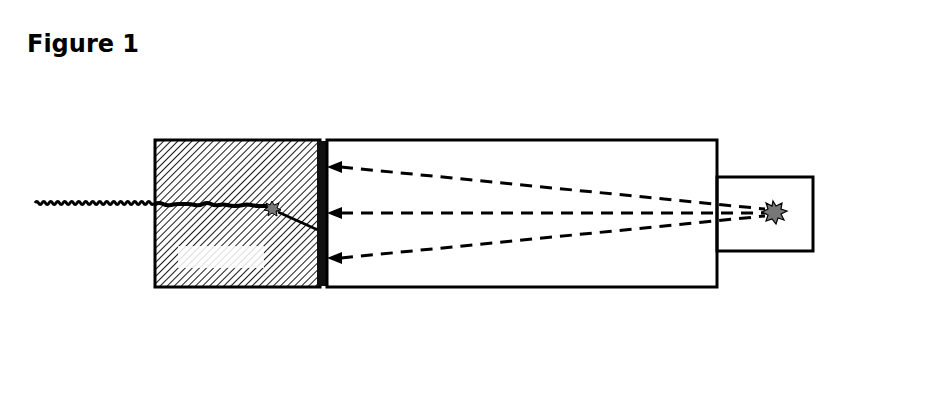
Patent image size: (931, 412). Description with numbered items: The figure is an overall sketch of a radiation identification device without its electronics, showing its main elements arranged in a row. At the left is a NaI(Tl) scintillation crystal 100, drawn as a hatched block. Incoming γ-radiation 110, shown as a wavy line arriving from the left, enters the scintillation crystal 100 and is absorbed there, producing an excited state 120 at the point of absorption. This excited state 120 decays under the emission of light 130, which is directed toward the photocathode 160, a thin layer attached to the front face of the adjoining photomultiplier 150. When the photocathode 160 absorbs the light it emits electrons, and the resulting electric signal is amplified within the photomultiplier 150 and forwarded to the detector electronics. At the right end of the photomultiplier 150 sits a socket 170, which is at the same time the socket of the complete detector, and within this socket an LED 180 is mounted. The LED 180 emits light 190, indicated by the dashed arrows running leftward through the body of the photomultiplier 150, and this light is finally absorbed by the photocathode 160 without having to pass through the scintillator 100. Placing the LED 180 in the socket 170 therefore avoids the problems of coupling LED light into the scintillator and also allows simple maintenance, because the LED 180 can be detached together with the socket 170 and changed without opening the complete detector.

The NaI(Tl) scintillation crystal 100 is at (239, 168).
The γ-radiation 110 is at (130, 207).
The excited state 120 is at (281, 204).
The light 130 is at (282, 214).
The photomultiplier 150 is at (525, 138).
The photocathode 160 is at (328, 235).
The socket 170 is at (757, 168).
The LED 180 is at (776, 222).
The light 190 is at (615, 218).